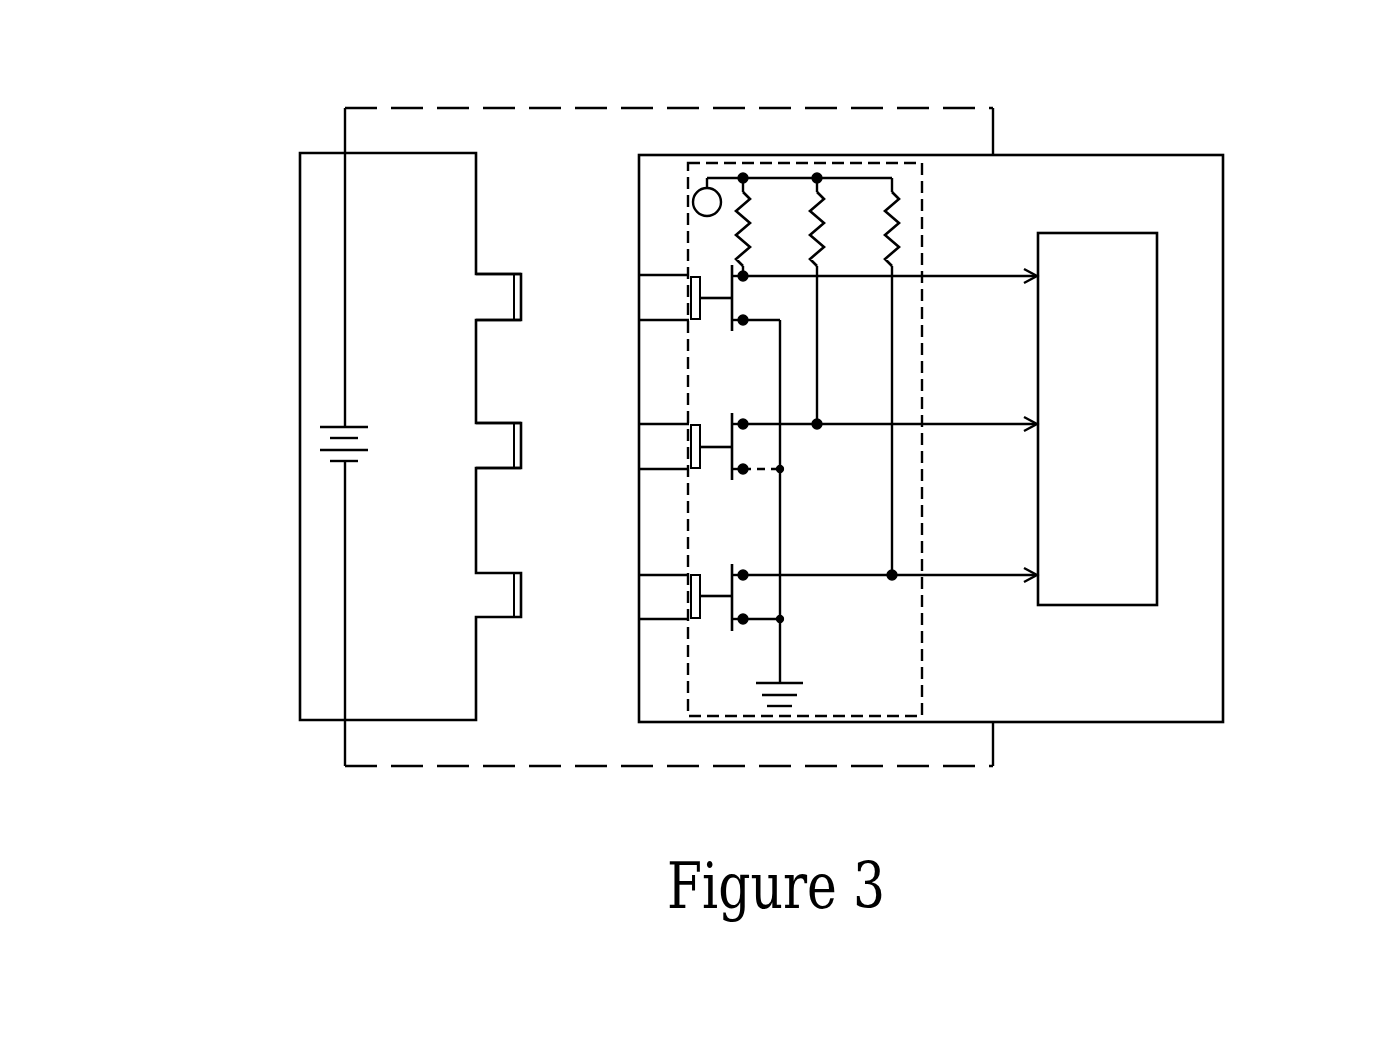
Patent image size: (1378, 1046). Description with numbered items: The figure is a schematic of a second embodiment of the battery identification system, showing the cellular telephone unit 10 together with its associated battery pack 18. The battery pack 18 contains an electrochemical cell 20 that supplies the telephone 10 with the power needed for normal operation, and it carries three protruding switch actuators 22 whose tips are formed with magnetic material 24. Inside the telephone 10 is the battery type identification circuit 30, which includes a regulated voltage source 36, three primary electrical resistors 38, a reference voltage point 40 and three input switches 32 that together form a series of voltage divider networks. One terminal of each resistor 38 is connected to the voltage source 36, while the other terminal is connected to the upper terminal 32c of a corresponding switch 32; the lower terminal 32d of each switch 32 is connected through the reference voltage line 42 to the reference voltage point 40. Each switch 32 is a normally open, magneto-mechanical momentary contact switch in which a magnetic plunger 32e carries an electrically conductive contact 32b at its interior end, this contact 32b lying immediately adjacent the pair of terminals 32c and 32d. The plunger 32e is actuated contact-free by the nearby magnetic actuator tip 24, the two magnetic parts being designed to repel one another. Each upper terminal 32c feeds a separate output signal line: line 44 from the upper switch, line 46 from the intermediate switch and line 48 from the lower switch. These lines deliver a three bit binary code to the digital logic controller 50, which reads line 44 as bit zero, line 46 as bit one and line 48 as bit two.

The cellular telephone unit 10 is at (1199, 90).
The battery pack 18 is at (300, 190).
The electrochemical cell 20 is at (337, 426).
The switch actuators 22 is at (490, 274).
The magnetic material 24 is at (516, 314).
The battery type identification circuit 30 is at (688, 717).
The input switches 32 is at (641, 487).
The electrically conductive contact 32b is at (725, 590).
The upper terminal 32c is at (730, 567).
The lower terminal 32d is at (728, 622).
The magnetic plunger 32e is at (688, 589).
The regulated voltage source 36 is at (695, 196).
The primary electrical resistors 38 is at (745, 210).
The reference voltage point 40 is at (803, 683).
The reference voltage line 42 is at (780, 636).
The output signal line 44 is at (934, 276).
The output signal line 46 is at (1000, 424).
The output signal line 48 is at (998, 577).
The digital logic controller 50 is at (1157, 272).